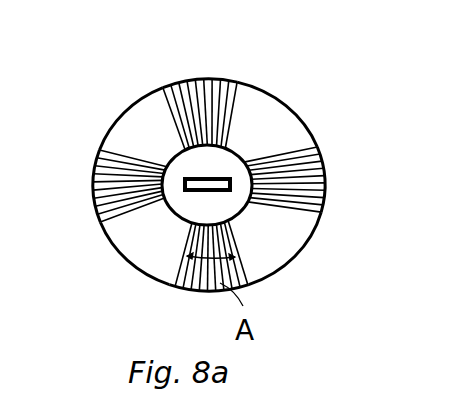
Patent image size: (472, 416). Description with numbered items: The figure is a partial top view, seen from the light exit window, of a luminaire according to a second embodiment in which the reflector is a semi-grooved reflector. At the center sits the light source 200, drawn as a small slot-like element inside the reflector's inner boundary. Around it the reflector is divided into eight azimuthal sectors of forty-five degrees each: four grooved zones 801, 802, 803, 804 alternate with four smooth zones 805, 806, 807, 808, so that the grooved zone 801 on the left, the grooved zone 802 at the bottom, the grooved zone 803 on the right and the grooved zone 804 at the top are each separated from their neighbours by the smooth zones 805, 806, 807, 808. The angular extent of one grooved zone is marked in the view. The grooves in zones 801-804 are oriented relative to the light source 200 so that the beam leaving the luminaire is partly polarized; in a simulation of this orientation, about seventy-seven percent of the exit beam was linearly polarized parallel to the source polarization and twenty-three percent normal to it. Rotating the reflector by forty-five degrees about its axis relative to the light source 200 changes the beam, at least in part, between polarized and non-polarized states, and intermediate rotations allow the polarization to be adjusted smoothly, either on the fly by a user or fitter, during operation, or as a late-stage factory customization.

The light source 200 is at (208, 177).
The grooved zone 801 is at (95, 227).
The grooved zone 802 is at (248, 282).
The grooved zone 803 is at (330, 197).
The grooved zone 804 is at (225, 82).
The smooth zone 805 is at (174, 270).
The smooth zone 806 is at (293, 225).
The smooth zone 807 is at (312, 132).
The smooth zone 808 is at (125, 110).